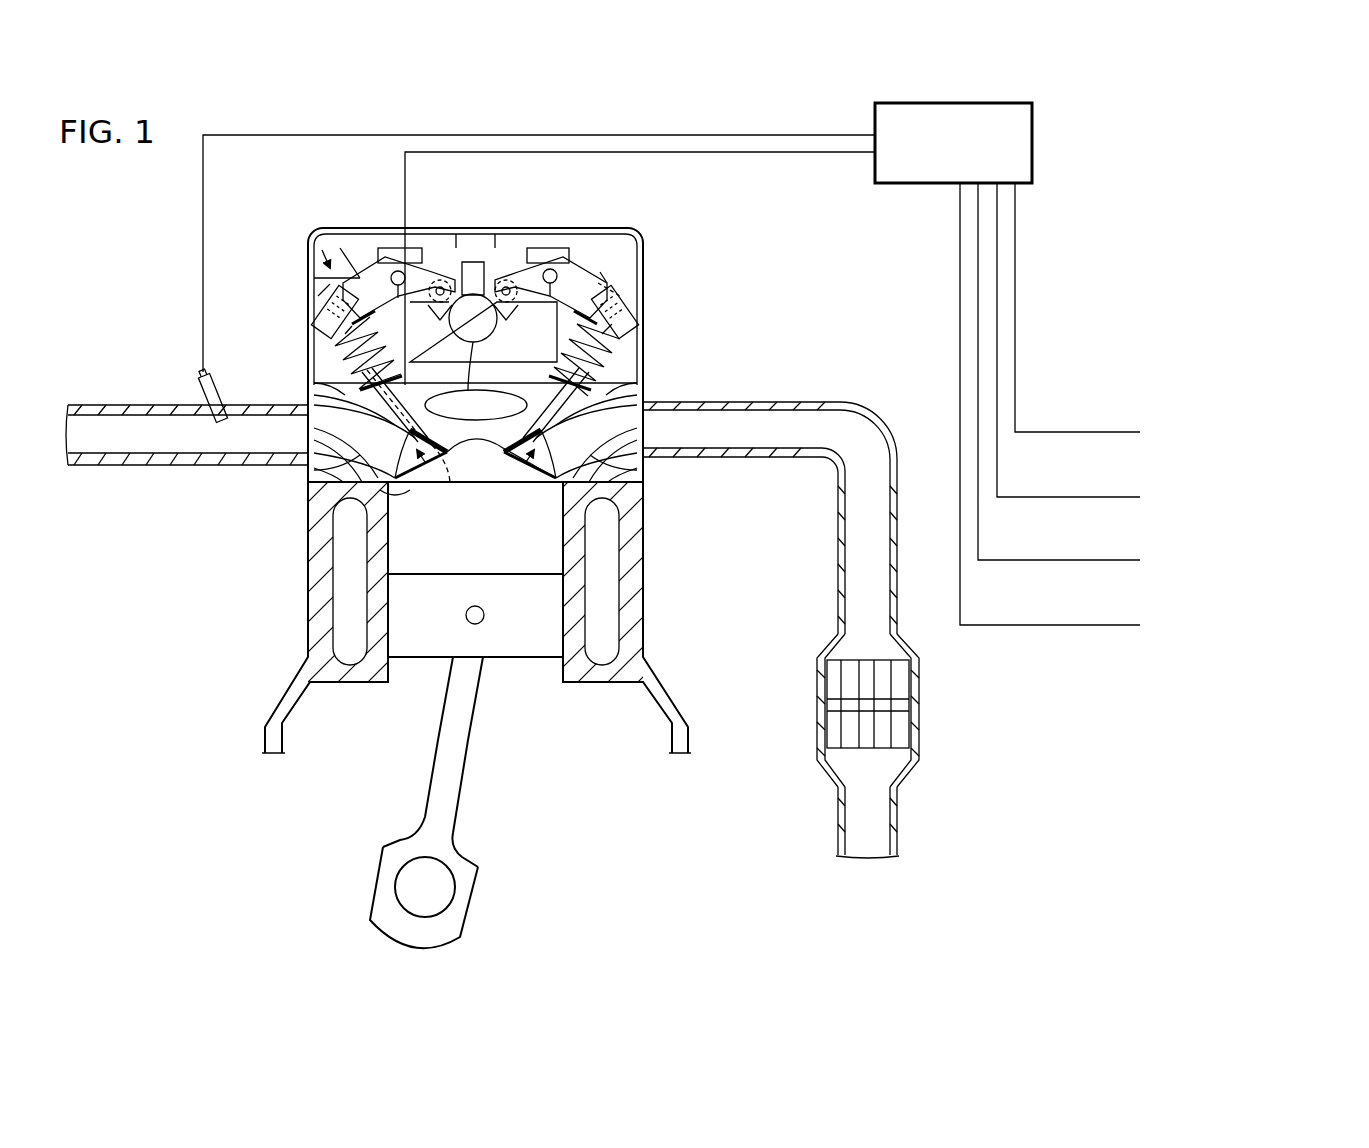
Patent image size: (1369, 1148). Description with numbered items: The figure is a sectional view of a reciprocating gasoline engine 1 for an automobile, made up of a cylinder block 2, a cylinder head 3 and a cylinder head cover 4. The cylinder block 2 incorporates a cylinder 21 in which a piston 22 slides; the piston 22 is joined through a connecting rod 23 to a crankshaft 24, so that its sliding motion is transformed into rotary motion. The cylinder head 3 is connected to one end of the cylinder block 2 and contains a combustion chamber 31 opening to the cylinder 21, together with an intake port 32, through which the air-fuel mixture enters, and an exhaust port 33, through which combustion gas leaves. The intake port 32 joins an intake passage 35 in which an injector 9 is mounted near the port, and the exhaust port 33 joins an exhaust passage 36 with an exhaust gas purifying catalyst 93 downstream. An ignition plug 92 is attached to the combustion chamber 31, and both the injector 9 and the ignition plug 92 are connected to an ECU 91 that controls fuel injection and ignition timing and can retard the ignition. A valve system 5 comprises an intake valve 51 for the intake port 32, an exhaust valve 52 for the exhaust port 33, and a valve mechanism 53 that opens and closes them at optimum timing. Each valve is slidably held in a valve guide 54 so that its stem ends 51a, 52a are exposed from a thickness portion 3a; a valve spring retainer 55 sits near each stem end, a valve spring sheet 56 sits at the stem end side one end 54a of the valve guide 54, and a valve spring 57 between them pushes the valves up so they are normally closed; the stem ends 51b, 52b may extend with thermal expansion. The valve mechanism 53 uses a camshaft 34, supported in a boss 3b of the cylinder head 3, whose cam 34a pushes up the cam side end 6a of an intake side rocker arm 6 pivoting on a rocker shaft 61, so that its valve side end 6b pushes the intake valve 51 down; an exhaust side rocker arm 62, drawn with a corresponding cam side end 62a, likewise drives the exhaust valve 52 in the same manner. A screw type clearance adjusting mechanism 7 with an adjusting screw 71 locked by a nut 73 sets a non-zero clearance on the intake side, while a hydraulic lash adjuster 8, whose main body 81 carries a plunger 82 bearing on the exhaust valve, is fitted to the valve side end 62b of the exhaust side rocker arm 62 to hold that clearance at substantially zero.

The engine 1 is at (496, 128).
The cylinder block 2 is at (637, 557).
The cylinder head 3 is at (647, 282).
The thickness portion 3a is at (308, 396).
The boss 3b is at (575, 248).
The cylinder head cover 4 is at (355, 228).
The valve system 5 is at (484, 458).
The intake side rocker arm 6 is at (372, 258).
The cam side end 6a is at (435, 285).
The valve side end 6b is at (320, 262).
The screw type clearance adjusting mechanism 7 is at (312, 262).
The hydraulic lash adjuster 8 is at (646, 286).
The injector 9 is at (198, 389).
The cylinder 21 is at (555, 530).
The piston 22 is at (553, 612).
The connecting rod 23 is at (462, 750).
The crankshaft 24 is at (440, 892).
The combustion chamber 31 is at (428, 482).
The intake port 32 is at (310, 433).
The exhaust port 33 is at (648, 418).
The camshaft 34 is at (476, 290).
The cam 34a is at (476, 381).
The intake passage 35 is at (107, 428).
The exhaust passage 36 is at (828, 402).
The intake valve 51 is at (335, 555).
The stem end 51a is at (305, 330).
The stem end 51b is at (316, 500).
The exhaust valve 52 is at (536, 470).
The stem end 52a is at (483, 332).
The stem end 52b is at (645, 474).
The valve mechanism 53 is at (455, 255).
The valve guide 54 is at (318, 530).
The stem end side one end 54a is at (312, 470).
The valve spring retainer 55 is at (305, 345).
The valve spring sheet 56 is at (310, 372).
The valve spring 57 is at (302, 372).
The rocker shaft 61 is at (567, 260).
The exhaust side rocker arm 62 is at (556, 258).
The exhaust cam 62a is at (508, 282).
The valve side end 62b is at (622, 282).
The adjusting screw 71 is at (312, 282).
The nut 73 is at (312, 306).
The main body 81 is at (642, 300).
The plunger 82 is at (646, 318).
The ECU 91 is at (937, 183).
The ignition plug 92 is at (455, 482).
The exhaust gas purifying catalyst 93 is at (898, 705).